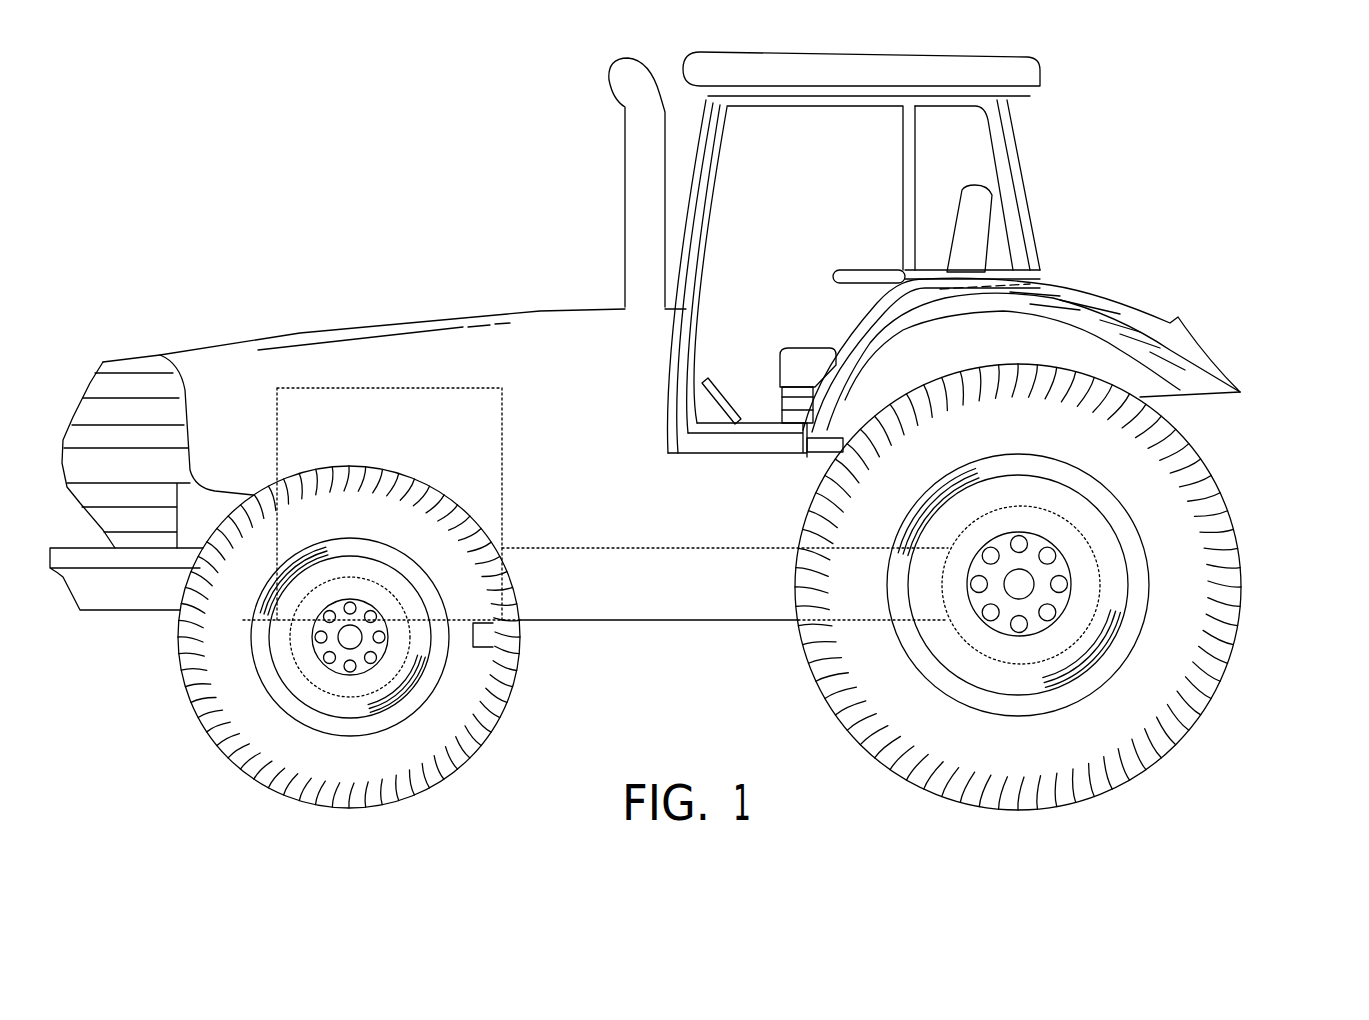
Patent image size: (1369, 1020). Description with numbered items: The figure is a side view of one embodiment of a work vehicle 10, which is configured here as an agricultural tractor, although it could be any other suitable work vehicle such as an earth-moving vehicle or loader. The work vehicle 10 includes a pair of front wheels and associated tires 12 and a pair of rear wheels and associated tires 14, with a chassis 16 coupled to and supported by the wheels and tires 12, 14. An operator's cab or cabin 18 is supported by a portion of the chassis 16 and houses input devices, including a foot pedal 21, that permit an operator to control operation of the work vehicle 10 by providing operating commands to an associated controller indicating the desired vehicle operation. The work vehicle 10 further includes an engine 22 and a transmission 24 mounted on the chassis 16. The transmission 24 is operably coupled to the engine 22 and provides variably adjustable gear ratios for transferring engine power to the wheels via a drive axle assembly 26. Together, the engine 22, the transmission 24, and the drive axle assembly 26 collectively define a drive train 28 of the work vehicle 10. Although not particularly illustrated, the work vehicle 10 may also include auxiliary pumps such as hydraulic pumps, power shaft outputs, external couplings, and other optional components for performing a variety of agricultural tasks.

The work vehicle 10 is at (273, 200).
The front wheels and associated tires 12 is at (180, 668).
The rear wheels and associated tires 14 is at (1223, 679).
The chassis 16 is at (605, 620).
The operator's cab 18 is at (1017, 148).
The foot pedal 21 is at (731, 405).
The engine 22 is at (342, 388).
The transmission 24 is at (643, 548).
The drive axle assembly 26 is at (1077, 530).
The drive train 28 is at (568, 337).